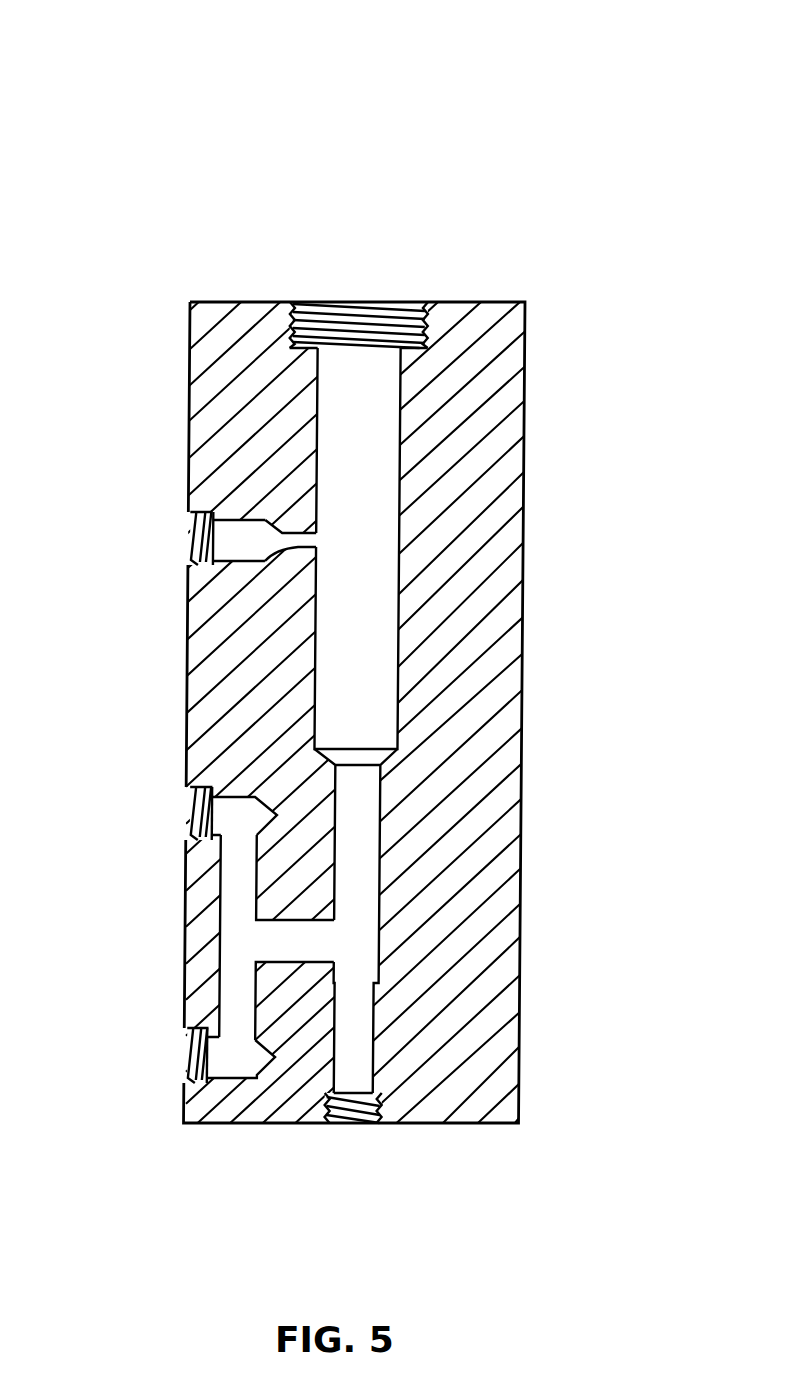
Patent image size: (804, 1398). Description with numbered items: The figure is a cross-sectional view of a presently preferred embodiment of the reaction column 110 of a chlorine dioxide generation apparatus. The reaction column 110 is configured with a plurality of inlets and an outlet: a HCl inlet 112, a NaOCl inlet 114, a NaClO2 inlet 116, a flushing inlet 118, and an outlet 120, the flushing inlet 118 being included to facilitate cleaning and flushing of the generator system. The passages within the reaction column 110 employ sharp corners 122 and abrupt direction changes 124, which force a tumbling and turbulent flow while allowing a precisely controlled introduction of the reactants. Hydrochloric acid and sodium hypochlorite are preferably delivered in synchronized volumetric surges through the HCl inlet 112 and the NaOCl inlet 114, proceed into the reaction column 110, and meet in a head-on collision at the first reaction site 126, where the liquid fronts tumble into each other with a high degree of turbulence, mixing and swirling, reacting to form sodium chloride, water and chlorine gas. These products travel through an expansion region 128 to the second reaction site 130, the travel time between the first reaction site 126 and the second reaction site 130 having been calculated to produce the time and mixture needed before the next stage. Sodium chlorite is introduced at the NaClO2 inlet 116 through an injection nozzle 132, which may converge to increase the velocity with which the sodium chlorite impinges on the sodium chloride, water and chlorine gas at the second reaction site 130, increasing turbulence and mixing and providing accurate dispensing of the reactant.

The reaction column 110 is at (604, 95).
The outlet 120 is at (361, 288).
The second reaction site 130 is at (369, 539).
The expansion region 128 is at (364, 764).
The abrupt direction changes 124 is at (366, 931).
The flushing inlet 118 is at (372, 1135).
The NaClO2 inlet 116 is at (178, 542).
The injection nozzle 132 is at (302, 543).
The HCl inlet 112 is at (173, 804).
The sharp corners 122 is at (232, 816).
The first reaction site 126 is at (238, 950).
The NaOCl inlet 114 is at (174, 1076).